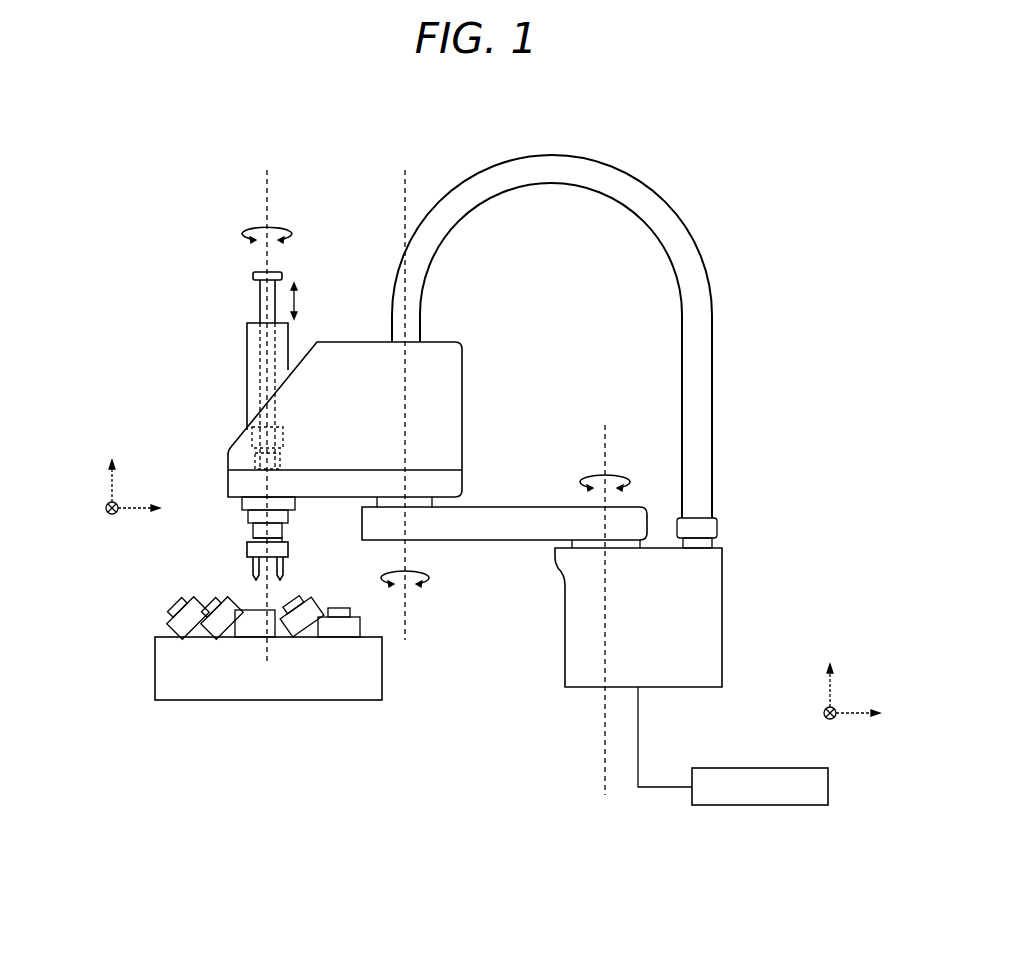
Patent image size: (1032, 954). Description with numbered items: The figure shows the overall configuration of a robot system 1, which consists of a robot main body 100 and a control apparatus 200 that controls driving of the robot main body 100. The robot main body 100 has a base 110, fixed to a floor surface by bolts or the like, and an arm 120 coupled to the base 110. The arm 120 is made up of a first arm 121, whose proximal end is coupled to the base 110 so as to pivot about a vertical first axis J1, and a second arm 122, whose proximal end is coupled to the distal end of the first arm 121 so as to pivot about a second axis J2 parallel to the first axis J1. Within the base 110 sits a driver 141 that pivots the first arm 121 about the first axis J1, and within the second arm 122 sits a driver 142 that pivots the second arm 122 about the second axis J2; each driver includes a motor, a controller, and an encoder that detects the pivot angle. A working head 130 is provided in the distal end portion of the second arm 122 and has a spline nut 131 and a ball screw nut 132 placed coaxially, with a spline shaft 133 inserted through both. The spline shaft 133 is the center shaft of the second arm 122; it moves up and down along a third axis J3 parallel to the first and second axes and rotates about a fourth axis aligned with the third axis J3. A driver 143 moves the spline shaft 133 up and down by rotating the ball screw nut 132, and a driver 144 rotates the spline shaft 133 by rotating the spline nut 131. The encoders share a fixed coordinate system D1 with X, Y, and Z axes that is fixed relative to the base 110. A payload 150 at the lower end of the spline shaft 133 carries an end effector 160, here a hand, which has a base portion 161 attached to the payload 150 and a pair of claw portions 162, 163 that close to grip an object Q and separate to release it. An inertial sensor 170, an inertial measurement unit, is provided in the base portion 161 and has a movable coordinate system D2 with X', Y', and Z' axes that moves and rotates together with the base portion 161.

The robot system 1 is at (93, 184).
The robot main body 100 is at (670, 195).
The base 110 is at (722, 612).
The arm 120 is at (437, 455).
The first arm 121 is at (520, 517).
The second arm 122 is at (340, 357).
The working head 130 is at (225, 373).
The spline nut 131 is at (262, 462).
The ball screw nut 132 is at (256, 437).
The spline shaft 133 is at (260, 300).
The driver 141 is at (603, 570).
The driver 142 is at (425, 462).
The driver 143 is at (425, 435).
The driver 144 is at (428, 400).
The payload 150 is at (262, 532).
The end effector 160 is at (247, 564).
The base portion 161 is at (288, 547).
The claw portion 162 is at (285, 565).
The claw portion 163 is at (253, 566).
The inertial sensor 170 is at (290, 522).
The control apparatus 200 is at (763, 766).
The object Q is at (337, 633).
The first axis J1 is at (605, 433).
The second axis J2 is at (405, 605).
The third axis J3 is at (268, 188).
The fixed coordinate system D1 is at (866, 684).
The movable coordinate system D2 is at (85, 468).